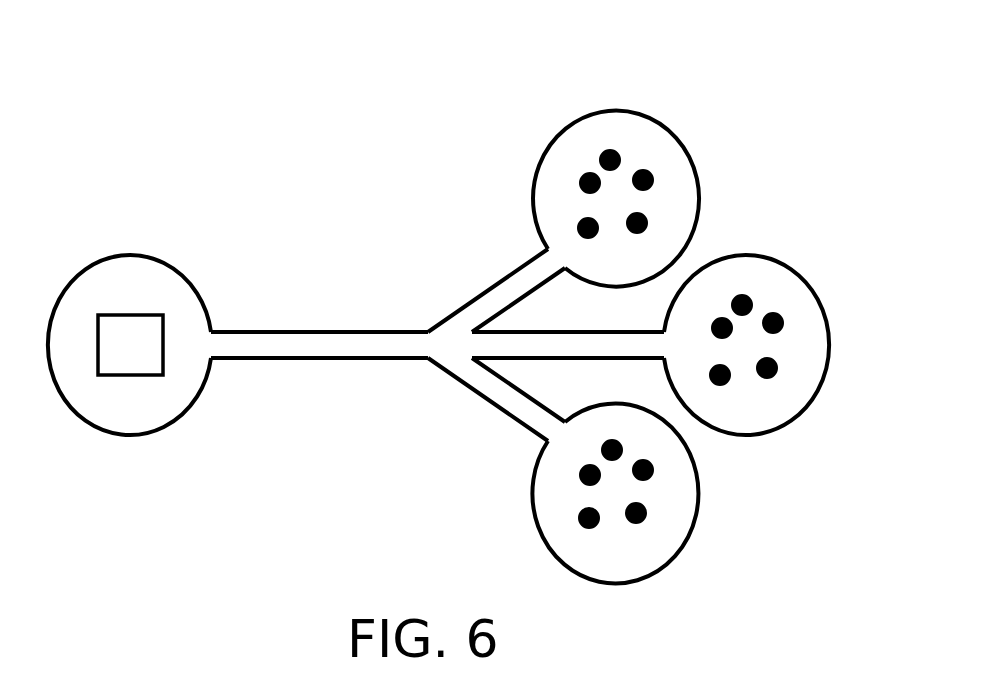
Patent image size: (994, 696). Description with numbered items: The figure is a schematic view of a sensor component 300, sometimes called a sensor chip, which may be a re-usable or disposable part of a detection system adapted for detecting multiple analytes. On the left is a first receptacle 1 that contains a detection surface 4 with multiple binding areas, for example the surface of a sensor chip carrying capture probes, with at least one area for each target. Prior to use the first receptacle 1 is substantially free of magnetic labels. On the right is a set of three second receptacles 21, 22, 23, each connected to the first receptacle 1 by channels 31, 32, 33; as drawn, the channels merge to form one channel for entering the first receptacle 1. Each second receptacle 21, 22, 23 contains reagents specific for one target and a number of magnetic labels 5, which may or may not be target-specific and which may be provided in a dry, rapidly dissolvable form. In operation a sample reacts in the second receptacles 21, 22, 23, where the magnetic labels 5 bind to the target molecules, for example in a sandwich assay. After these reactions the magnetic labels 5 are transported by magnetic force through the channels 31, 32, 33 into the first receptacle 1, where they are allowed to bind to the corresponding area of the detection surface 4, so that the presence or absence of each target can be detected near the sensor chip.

The sensor component 300 is at (729, 73).
The first receptacle 1 is at (130, 254).
The detection surface 4 is at (139, 358).
The channel 31 is at (334, 330).
The channel 32 is at (488, 288).
The channel 33 is at (487, 400).
The second receptacle 21 is at (532, 200).
The second receptacle 22 is at (746, 436).
The second receptacle 23 is at (532, 490).
The magnetic label 5 is at (655, 180).